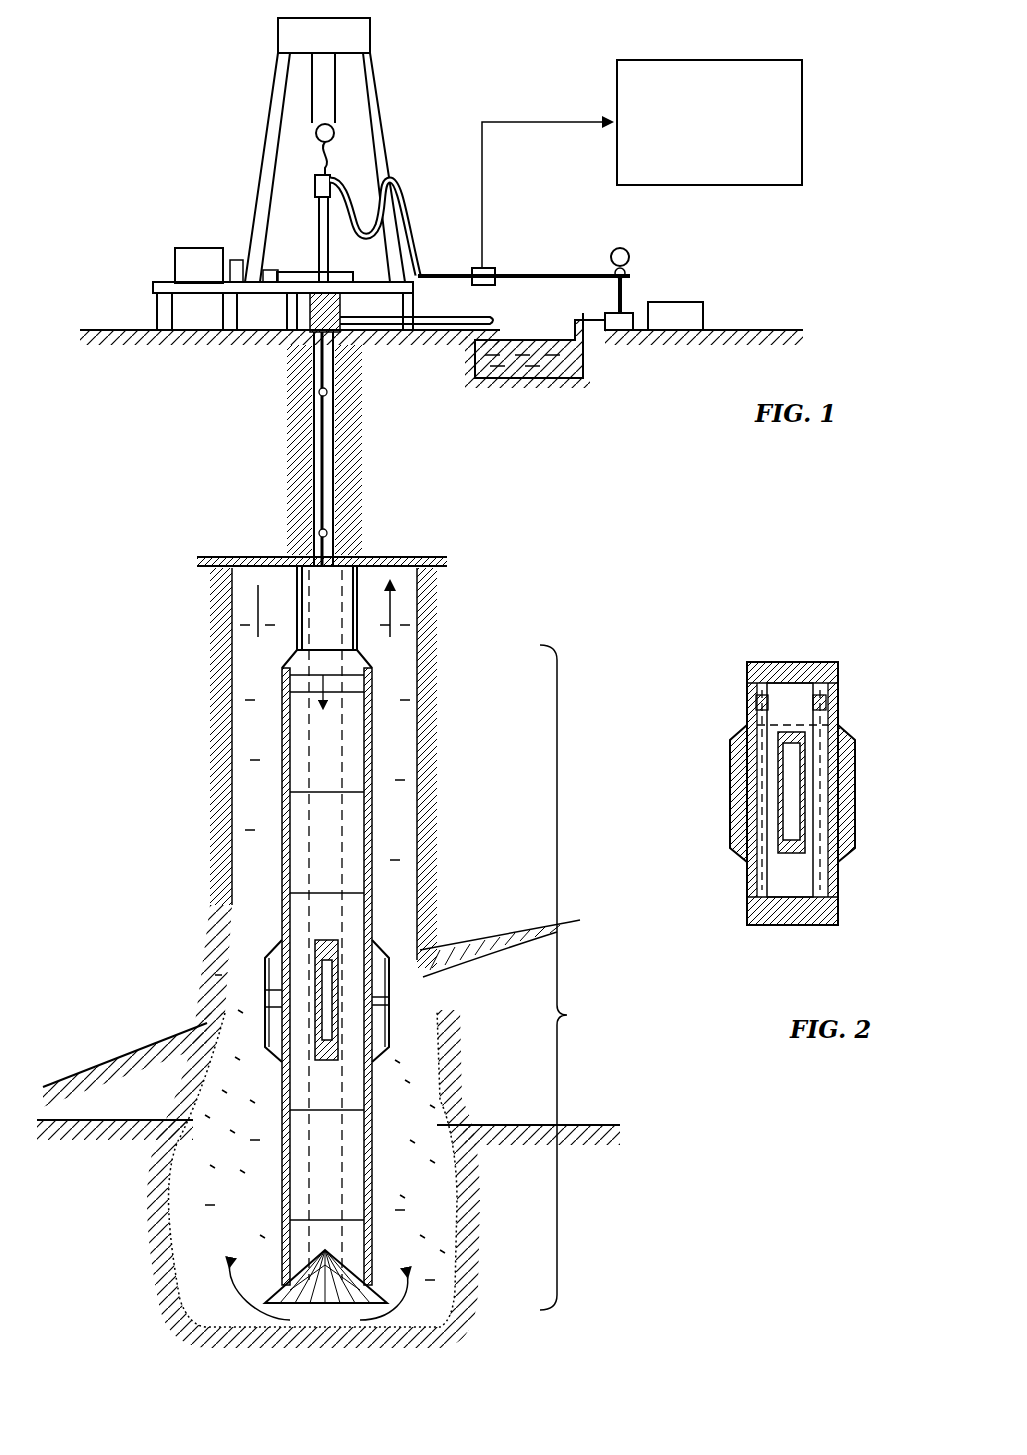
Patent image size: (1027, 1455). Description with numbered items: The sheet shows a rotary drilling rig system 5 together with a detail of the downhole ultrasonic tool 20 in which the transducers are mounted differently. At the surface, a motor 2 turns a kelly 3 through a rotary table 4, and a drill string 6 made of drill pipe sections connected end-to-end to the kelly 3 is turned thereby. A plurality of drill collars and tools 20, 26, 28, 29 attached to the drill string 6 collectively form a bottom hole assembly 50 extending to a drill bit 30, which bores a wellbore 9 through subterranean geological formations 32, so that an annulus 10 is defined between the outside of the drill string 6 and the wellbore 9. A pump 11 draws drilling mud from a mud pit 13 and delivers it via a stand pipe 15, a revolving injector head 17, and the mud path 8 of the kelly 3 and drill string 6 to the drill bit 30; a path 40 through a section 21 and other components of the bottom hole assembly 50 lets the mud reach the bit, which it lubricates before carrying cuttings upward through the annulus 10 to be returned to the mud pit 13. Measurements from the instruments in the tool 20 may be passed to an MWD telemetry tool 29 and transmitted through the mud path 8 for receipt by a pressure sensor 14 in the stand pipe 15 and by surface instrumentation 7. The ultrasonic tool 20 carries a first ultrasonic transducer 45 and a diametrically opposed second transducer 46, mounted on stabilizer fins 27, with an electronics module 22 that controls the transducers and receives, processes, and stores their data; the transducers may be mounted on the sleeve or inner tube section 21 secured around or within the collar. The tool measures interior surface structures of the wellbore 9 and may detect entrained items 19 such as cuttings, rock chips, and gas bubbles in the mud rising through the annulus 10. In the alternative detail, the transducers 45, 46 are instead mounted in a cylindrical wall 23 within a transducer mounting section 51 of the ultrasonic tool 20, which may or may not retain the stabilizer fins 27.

In FIG. 1, the motor 2 is at (205, 247).
In FIG. 1, the kelly 3 is at (317, 210).
In FIG. 1, the rotary table 4 is at (352, 268).
In FIG. 1, the rotary drilling rig system 5 is at (233, 70).
In FIG. 1, the drill string 6 is at (290, 445).
In FIG. 1, the surface instrumentation 7 is at (764, 59).
In FIG. 1, the mud path 8 is at (345, 640).
In FIG. 1, the wellbore 9 is at (312, 541).
In FIG. 1, the annulus 10 is at (337, 548).
In FIG. 1, the pump 11 is at (705, 312).
In FIG. 1, the mud pit 13 is at (528, 368).
In FIG. 1, the pressure sensor 14 is at (473, 269).
In FIG. 1, the stand pipe 15 is at (541, 272).
In FIG. 1, the revolving injector head 17 is at (316, 185).
In FIG. 1, the entrained items 19 is at (240, 1057).
In FIG. 1, the downhole ultrasonic tool 20 is at (372, 955).
In FIG. 2, the downhole ultrasonic tool 20 is at (838, 723).
In FIG. 1, the section 21 is at (352, 928).
In FIG. 2, the section 21 is at (817, 683).
In FIG. 1, the electronics module 22 is at (372, 943).
In FIG. 2, the cylindrical wall 23 is at (837, 877).
In FIG. 1, the drill collar 26 is at (282, 712).
In FIG. 1, the stabilizer fins 27 is at (388, 1056).
In FIG. 2, the stabilizer fins 27 is at (787, 793).
In FIG. 1, the drill collar 28 is at (353, 1172).
In FIG. 1, the MWD telemetry tool 29 is at (282, 823).
In FIG. 1, the drill bit 30 is at (378, 1277).
In FIG. 1, the subterranean geological formations 32 is at (85, 981).
In FIG. 1, the path 40 is at (320, 910).
In FIG. 1, the ultrasonic transducer 45 is at (392, 990).
In FIG. 2, the ultrasonic transducer 45 is at (826, 700).
In FIG. 1, the second transducer 46 is at (262, 985).
In FIG. 2, the second transducer 46 is at (752, 700).
In FIG. 1, the bottom hole assembly 50 is at (577, 977).
In FIG. 2, the transducer mounting section 51 is at (747, 717).